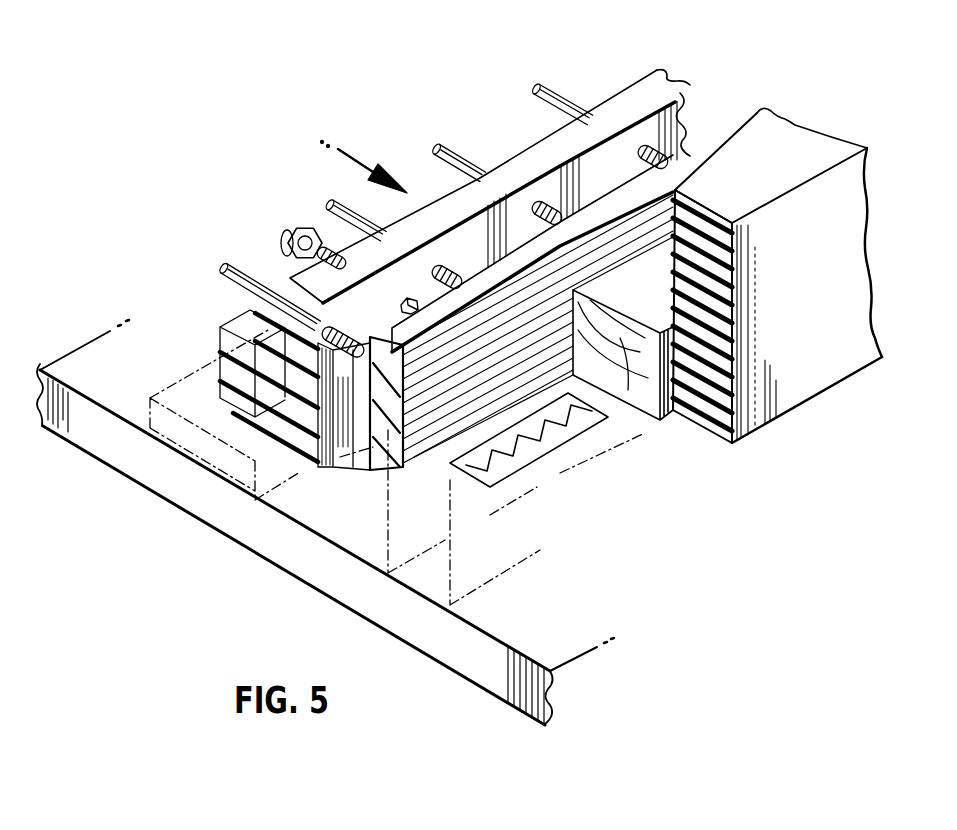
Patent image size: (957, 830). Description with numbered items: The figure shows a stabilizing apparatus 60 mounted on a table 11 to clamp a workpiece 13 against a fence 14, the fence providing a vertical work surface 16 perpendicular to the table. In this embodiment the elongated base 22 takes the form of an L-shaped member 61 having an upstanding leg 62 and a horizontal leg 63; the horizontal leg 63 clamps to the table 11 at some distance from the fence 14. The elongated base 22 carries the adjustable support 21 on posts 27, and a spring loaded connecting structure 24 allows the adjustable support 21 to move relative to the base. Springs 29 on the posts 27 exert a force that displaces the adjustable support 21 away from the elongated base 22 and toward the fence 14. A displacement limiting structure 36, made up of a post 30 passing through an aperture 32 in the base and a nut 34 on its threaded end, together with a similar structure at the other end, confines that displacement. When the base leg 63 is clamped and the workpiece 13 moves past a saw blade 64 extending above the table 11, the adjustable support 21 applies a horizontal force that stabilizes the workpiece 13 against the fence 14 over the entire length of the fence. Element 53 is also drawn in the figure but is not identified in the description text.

The table 11 is at (93, 428).
The workpiece 13 is at (652, 312).
The fence 14 is at (738, 323).
The vertical work surface 16 is at (667, 264).
The adjustable support 21 is at (762, 121).
The elongated base 22 is at (668, 82).
The spring loaded connecting structure 24 is at (704, 121).
The posts 27 is at (548, 92).
The springs 29 is at (684, 134).
The end post 30 is at (296, 264).
The aperture 32 is at (406, 305).
The nut 34 is at (309, 232).
The displacement limiting structure 36 is at (292, 216).
The block 53 is at (222, 346).
The stabilizing apparatus 60 is at (465, 181).
The L-shaped member 61 is at (235, 420).
The upstanding leg 62 is at (300, 372).
The horizontal leg 63 is at (215, 435).
The saw blade 64 is at (541, 437).